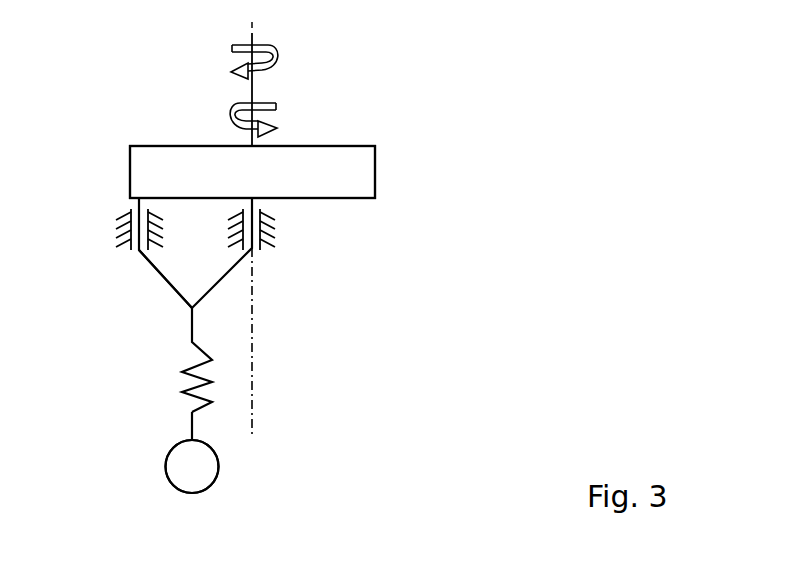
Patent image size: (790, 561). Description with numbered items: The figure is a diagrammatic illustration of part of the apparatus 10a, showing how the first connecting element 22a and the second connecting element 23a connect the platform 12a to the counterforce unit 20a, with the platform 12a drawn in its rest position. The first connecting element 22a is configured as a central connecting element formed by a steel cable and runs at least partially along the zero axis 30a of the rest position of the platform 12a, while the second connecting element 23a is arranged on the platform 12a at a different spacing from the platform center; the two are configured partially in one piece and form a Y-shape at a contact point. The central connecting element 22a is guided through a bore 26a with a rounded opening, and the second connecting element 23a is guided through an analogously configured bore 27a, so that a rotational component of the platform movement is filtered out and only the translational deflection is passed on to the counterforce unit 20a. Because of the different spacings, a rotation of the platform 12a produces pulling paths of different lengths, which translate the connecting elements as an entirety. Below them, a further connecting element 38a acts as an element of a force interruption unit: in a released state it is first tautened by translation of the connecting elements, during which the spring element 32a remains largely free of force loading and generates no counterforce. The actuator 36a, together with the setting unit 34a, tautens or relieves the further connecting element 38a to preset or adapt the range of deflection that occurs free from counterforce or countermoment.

The apparatus 10a is at (135, 126).
The platform 12a is at (320, 157).
The counterforce unit 20a is at (164, 465).
The first connecting element 22a is at (236, 264).
The second connecting element 23a is at (162, 275).
The bore 26a is at (263, 207).
The bore 27a is at (130, 203).
The zero axis 30a is at (253, 387).
The spring element 32a is at (212, 367).
The setting unit 34a is at (270, 466).
The actuator 36a is at (200, 467).
The further connecting element 38a is at (193, 427).